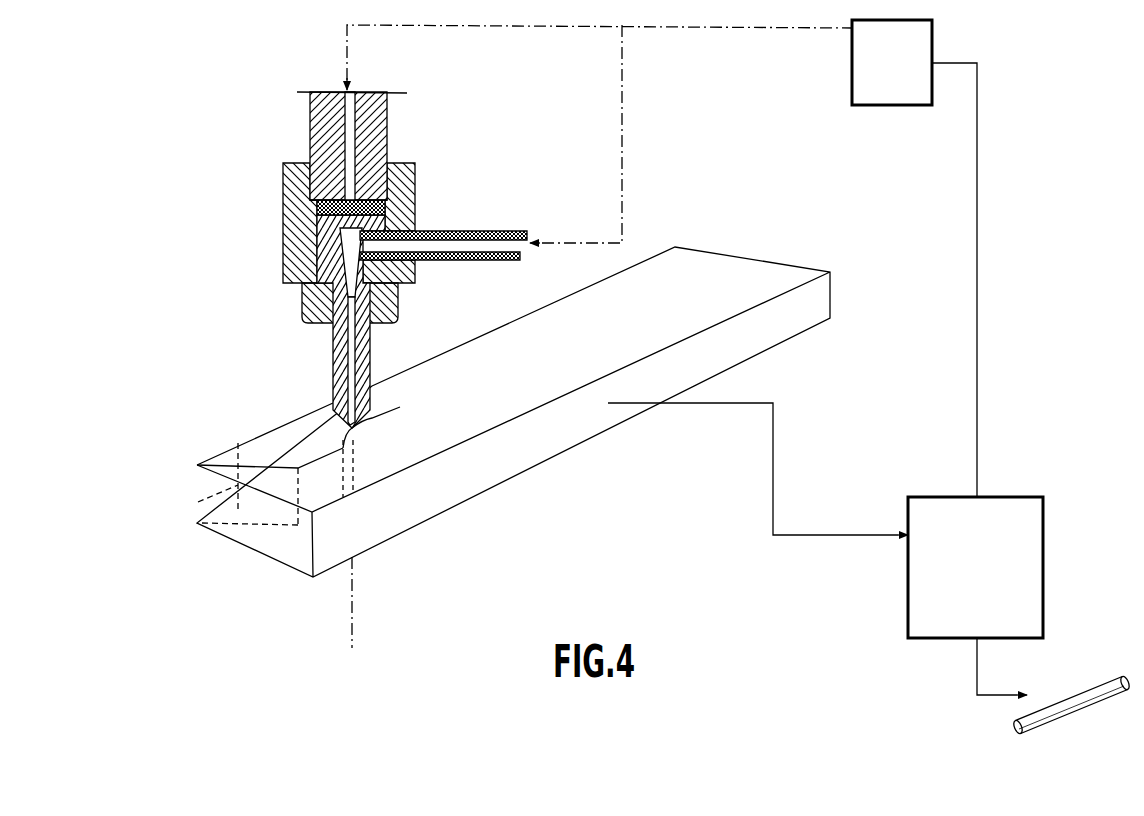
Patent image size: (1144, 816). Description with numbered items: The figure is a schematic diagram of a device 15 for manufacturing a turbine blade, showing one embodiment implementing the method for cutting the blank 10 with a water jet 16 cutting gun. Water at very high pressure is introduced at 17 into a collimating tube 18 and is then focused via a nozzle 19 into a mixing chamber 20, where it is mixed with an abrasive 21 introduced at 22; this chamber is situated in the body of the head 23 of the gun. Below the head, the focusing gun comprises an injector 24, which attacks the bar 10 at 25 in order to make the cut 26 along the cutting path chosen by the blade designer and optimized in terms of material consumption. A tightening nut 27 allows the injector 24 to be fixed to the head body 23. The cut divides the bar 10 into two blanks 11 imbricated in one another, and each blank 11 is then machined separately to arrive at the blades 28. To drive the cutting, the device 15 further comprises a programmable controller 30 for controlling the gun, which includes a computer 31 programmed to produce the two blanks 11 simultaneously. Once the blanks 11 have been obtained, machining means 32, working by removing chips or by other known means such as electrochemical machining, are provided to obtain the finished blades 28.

The blank 10 is at (795, 313).
The blank 11 is at (393, 390).
The device 15 is at (520, 135).
The water jet 16 is at (353, 580).
The water introduction point 17 is at (349, 88).
The collimating tube 18 is at (312, 118).
The nozzle 19 is at (332, 212).
The mixing chamber 20 is at (380, 223).
The abrasive 21 is at (548, 243).
The abrasive introduction point 22 is at (423, 262).
The head body 23 is at (285, 230).
The injector 24 is at (333, 362).
The attack point 25 is at (358, 430).
The cut 26 is at (197, 503).
The tightening nut 27 is at (305, 300).
The blade 28 is at (1090, 706).
The programmable controller 30 is at (1018, 152).
The computer 31 is at (858, 72).
The machining means 32 is at (1025, 543).